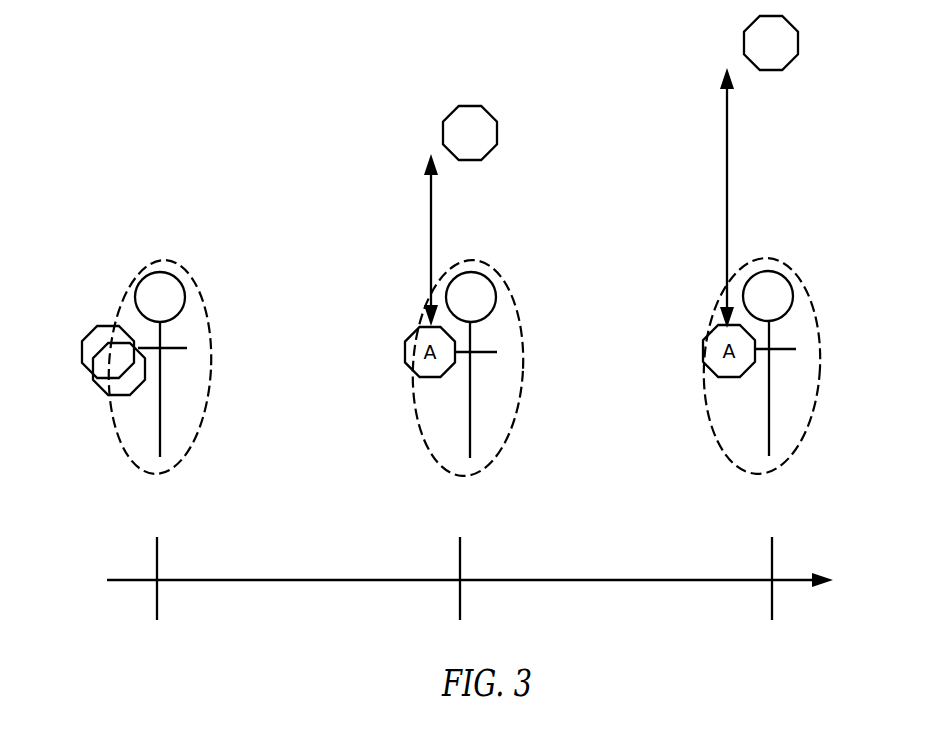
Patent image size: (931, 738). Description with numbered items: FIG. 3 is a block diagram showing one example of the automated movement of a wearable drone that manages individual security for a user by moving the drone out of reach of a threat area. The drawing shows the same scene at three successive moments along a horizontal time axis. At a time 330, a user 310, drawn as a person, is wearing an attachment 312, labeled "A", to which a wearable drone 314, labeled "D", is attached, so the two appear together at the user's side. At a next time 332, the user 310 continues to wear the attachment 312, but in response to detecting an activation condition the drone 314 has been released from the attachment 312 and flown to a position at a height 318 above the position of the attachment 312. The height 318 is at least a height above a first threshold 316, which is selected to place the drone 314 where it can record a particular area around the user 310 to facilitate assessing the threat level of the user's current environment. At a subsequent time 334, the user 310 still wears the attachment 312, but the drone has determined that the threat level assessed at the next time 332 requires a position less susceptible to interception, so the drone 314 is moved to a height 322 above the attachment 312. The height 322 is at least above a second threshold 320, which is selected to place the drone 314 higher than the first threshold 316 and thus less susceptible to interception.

The user 310 is at (160, 263).
The attachment 312 is at (82, 348).
The wearable drone 314 is at (107, 387).
The first threshold 316 is at (416, 153).
The height 318 is at (427, 253).
The second threshold 320 is at (704, 64).
The height 322 is at (729, 208).
The time 330 is at (157, 548).
The next time 332 is at (460, 548).
The subsequent time 334 is at (772, 548).